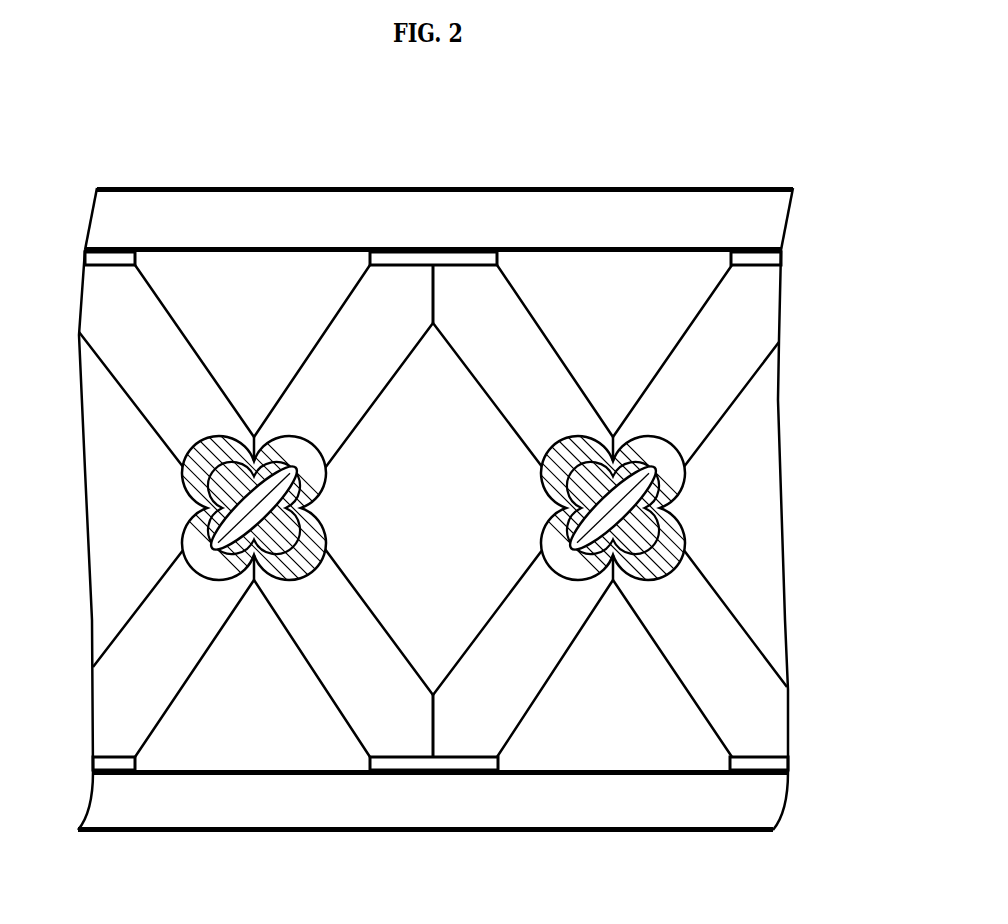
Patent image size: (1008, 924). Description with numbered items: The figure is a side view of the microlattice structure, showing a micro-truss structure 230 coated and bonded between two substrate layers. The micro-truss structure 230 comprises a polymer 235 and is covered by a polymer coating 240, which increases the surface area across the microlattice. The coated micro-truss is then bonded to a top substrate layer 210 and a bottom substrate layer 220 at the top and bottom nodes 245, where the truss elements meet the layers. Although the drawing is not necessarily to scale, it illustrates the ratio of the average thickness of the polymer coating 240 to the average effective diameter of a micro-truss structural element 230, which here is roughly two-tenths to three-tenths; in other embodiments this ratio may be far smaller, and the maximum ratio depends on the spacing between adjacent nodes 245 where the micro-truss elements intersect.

The substrate layer 210 is at (630, 230).
The substrate layer 220 is at (244, 815).
The micro-truss structure 230 is at (713, 398).
The polymer 235 is at (627, 510).
The polymer coating 240 is at (675, 546).
The nodes 245 is at (446, 252).